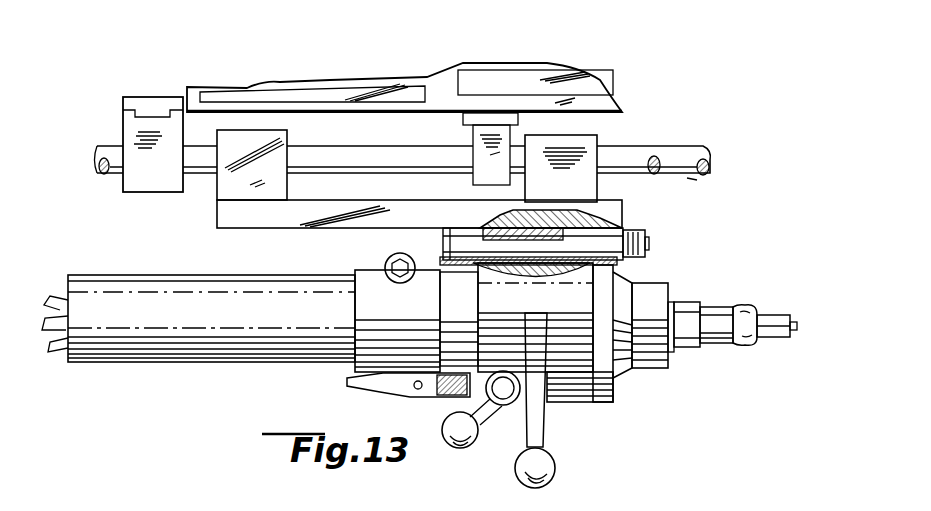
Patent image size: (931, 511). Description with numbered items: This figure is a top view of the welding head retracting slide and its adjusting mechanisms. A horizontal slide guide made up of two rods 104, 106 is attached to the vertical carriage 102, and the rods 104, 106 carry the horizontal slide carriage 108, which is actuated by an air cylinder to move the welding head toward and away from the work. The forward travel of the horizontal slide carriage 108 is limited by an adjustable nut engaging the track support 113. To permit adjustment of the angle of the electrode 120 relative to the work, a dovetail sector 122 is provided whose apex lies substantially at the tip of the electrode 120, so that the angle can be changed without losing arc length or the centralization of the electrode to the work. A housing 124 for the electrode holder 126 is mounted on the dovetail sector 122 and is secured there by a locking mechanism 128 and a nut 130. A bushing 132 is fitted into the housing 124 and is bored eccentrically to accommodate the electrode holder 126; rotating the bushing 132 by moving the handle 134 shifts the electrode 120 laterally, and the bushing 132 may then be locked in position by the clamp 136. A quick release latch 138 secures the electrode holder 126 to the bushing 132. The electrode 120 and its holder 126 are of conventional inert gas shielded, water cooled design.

The carriage 102 is at (593, 87).
The rod 104 is at (627, 157).
The rod 106 is at (687, 180).
The horizontal slide carriage 108 is at (310, 217).
The track support 113 is at (155, 180).
The electrode 120 is at (792, 331).
The dovetail sector 122 is at (537, 233).
The housing 124 is at (582, 407).
The electrode holder 126 is at (222, 363).
The locking mechanism 128 is at (593, 243).
The nut 130 is at (633, 262).
The bushing 132 is at (468, 302).
The handle 134 is at (553, 478).
The clamp 136 is at (490, 420).
The quick release latch 138 is at (360, 387).